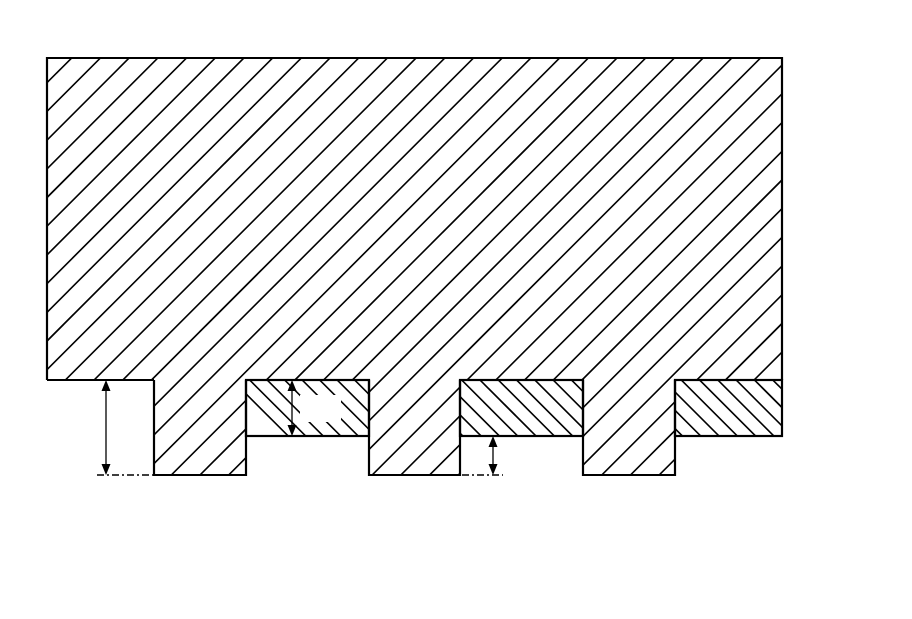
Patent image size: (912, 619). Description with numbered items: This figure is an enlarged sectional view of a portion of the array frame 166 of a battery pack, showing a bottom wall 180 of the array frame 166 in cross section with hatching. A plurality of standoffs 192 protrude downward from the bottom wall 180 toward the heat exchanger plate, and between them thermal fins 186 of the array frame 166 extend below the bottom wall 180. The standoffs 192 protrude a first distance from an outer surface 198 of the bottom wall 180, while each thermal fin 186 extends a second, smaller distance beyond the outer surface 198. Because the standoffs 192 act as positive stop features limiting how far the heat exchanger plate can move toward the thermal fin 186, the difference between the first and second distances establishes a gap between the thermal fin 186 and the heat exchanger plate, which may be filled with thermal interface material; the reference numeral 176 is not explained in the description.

The array frame 166 is at (662, 42).
The top surface 176 is at (787, 54).
The bottom wall 180 is at (772, 176).
The thermal fin 186 is at (768, 400).
The standoffs 192 is at (195, 462).
The outer surface 198 is at (77, 383).